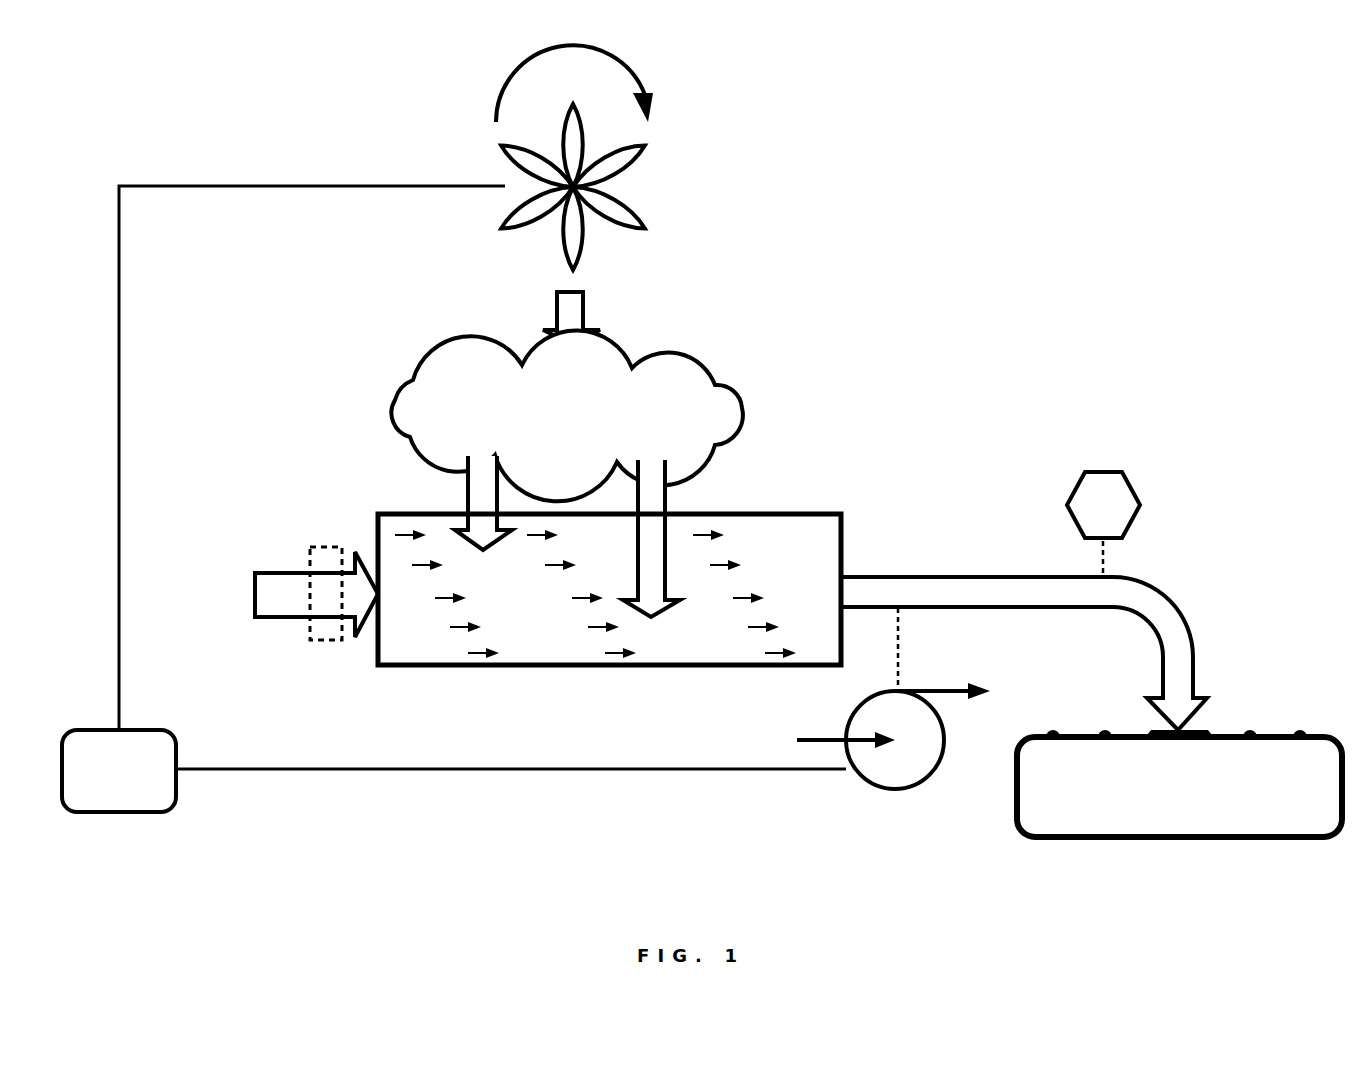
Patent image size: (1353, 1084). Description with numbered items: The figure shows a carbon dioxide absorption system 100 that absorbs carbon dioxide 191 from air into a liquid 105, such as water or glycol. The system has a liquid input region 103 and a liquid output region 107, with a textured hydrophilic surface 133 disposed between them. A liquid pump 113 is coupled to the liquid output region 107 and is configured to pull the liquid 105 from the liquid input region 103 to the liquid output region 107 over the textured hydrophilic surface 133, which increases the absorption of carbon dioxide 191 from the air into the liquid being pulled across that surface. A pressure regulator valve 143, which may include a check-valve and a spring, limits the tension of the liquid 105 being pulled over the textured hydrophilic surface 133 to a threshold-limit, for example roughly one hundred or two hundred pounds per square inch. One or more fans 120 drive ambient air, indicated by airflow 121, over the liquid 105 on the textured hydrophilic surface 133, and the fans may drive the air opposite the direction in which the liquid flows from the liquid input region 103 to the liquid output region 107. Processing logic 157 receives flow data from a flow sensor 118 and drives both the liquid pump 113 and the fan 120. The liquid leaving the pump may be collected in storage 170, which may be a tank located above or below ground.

The carbon dioxide absorption system 100 is at (1090, 143).
The fan 120 is at (633, 187).
The airflow 121 is at (585, 310).
The carbon dioxide 191 is at (556, 432).
The textured hydrophilic surface 133 is at (762, 535).
The liquid 105 is at (603, 625).
The liquid input region 103 is at (294, 589).
The pressure regulator valve 143 is at (331, 642).
The liquid output region 107 is at (915, 595).
The flow sensor 118 is at (1100, 472).
The liquid pump 113 is at (895, 790).
The processing logic 157 is at (104, 793).
The storage 170 is at (1238, 797).